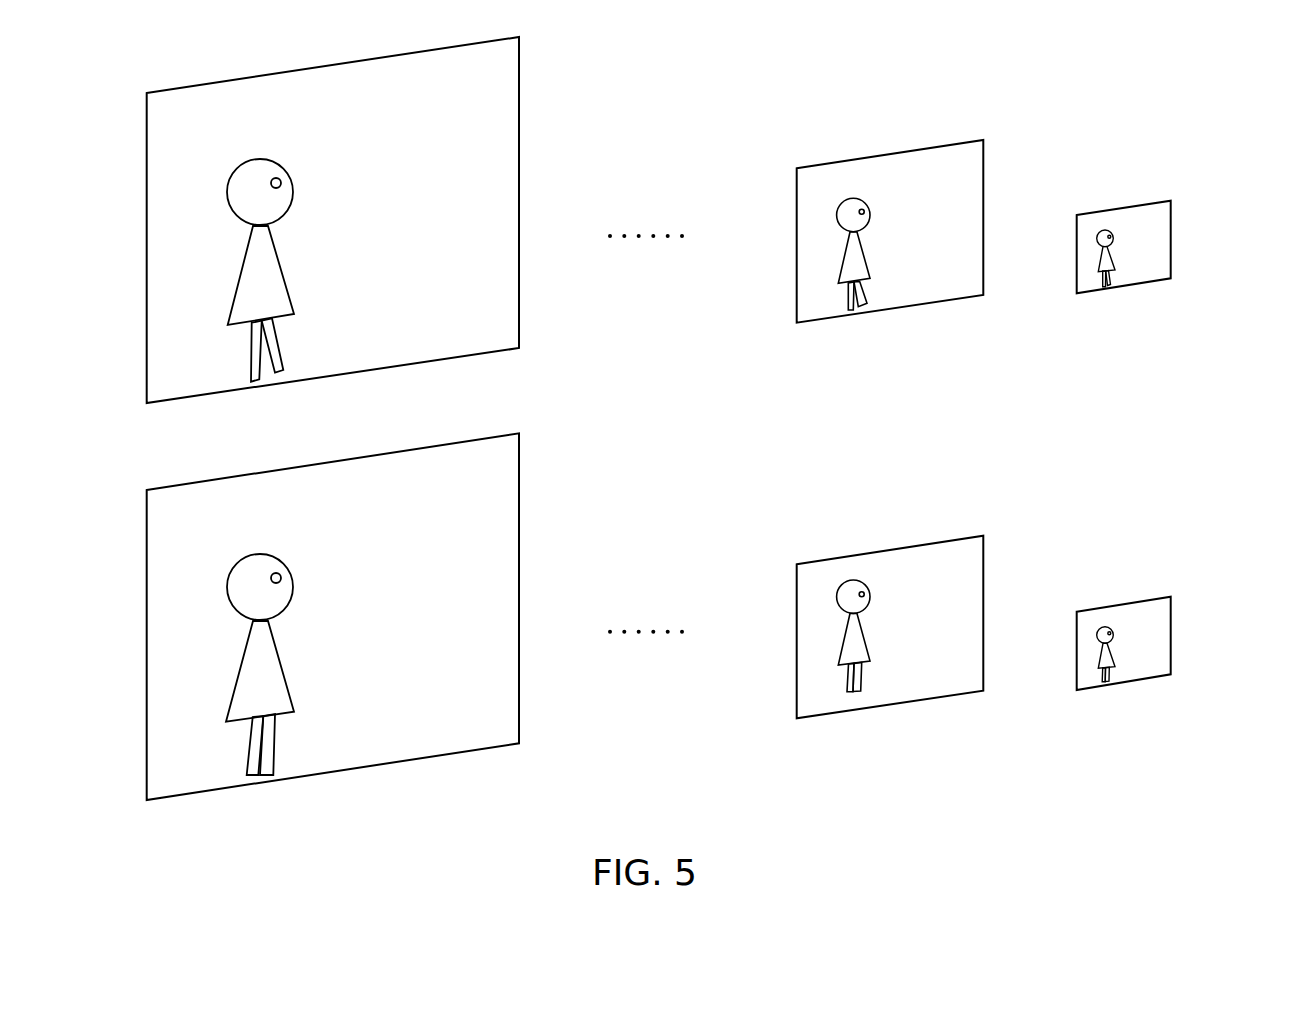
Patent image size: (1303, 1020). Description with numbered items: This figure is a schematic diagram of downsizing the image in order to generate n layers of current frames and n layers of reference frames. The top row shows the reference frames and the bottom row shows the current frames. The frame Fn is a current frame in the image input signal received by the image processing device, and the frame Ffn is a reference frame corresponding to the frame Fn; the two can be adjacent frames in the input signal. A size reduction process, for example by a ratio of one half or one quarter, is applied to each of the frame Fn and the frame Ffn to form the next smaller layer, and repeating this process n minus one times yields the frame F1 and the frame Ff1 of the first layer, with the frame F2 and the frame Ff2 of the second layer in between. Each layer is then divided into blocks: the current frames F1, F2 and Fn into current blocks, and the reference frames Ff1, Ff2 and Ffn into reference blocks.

The reference frame of the nth layer Ffn is at (519, 63).
The reference frame of the second layer Ff2 is at (983, 162).
The reference frame of the first layer Ff1 is at (1171, 227).
The current frame of the nth layer Fn is at (519, 460).
The current frame of the second layer F2 is at (983, 558).
The current frame of the first layer F1 is at (1171, 624).